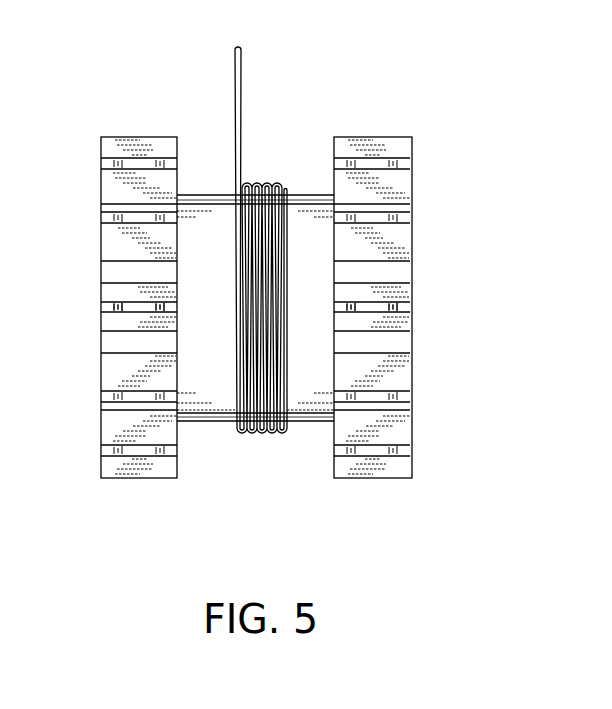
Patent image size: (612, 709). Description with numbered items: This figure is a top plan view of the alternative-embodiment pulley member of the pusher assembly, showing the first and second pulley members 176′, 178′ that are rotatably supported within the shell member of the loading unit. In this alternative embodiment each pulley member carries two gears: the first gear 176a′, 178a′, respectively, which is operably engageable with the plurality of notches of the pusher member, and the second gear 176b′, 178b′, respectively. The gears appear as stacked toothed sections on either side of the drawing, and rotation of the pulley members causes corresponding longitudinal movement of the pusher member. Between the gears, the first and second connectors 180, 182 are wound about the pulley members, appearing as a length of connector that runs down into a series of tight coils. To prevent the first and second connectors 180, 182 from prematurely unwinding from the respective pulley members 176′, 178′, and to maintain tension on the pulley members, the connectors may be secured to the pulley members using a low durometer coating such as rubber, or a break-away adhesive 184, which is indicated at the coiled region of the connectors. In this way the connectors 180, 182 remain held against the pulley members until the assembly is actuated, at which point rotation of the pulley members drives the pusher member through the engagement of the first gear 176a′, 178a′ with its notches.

The first connector 180 is at (221, 224).
The second connector 182 is at (235, 83).
The break-away adhesive 184 is at (298, 195).
The first pulley member 176′ is at (405, 310).
The second pulley member 178′ is at (383, 122).
The first gear 176a′ is at (405, 357).
The first gear 178a′ is at (378, 478).
The second gear 176b′ is at (110, 355).
The second gear 178b′ is at (140, 478).